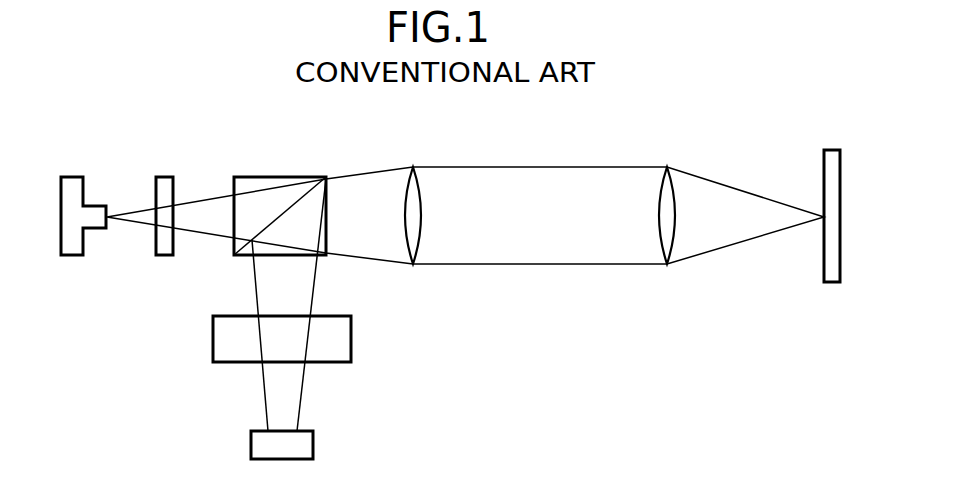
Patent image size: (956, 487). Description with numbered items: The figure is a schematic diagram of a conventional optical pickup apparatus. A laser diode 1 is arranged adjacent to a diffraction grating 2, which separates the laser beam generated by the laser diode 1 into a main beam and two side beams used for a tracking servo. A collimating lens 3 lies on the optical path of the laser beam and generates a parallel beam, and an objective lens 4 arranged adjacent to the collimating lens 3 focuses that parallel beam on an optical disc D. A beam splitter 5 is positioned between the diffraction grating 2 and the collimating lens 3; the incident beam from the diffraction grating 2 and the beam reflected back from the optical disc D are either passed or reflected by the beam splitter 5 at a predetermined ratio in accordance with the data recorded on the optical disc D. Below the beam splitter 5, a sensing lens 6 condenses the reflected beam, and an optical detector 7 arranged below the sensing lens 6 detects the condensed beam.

The laser diode 1 is at (72, 181).
The diffraction grating 2 is at (165, 182).
The collimating lens 3 is at (417, 176).
The objective lens 4 is at (665, 182).
The beam splitter 5 is at (291, 177).
The sensing lens 6 is at (349, 335).
The optical detector 7 is at (309, 442).
The optical disc D is at (826, 178).